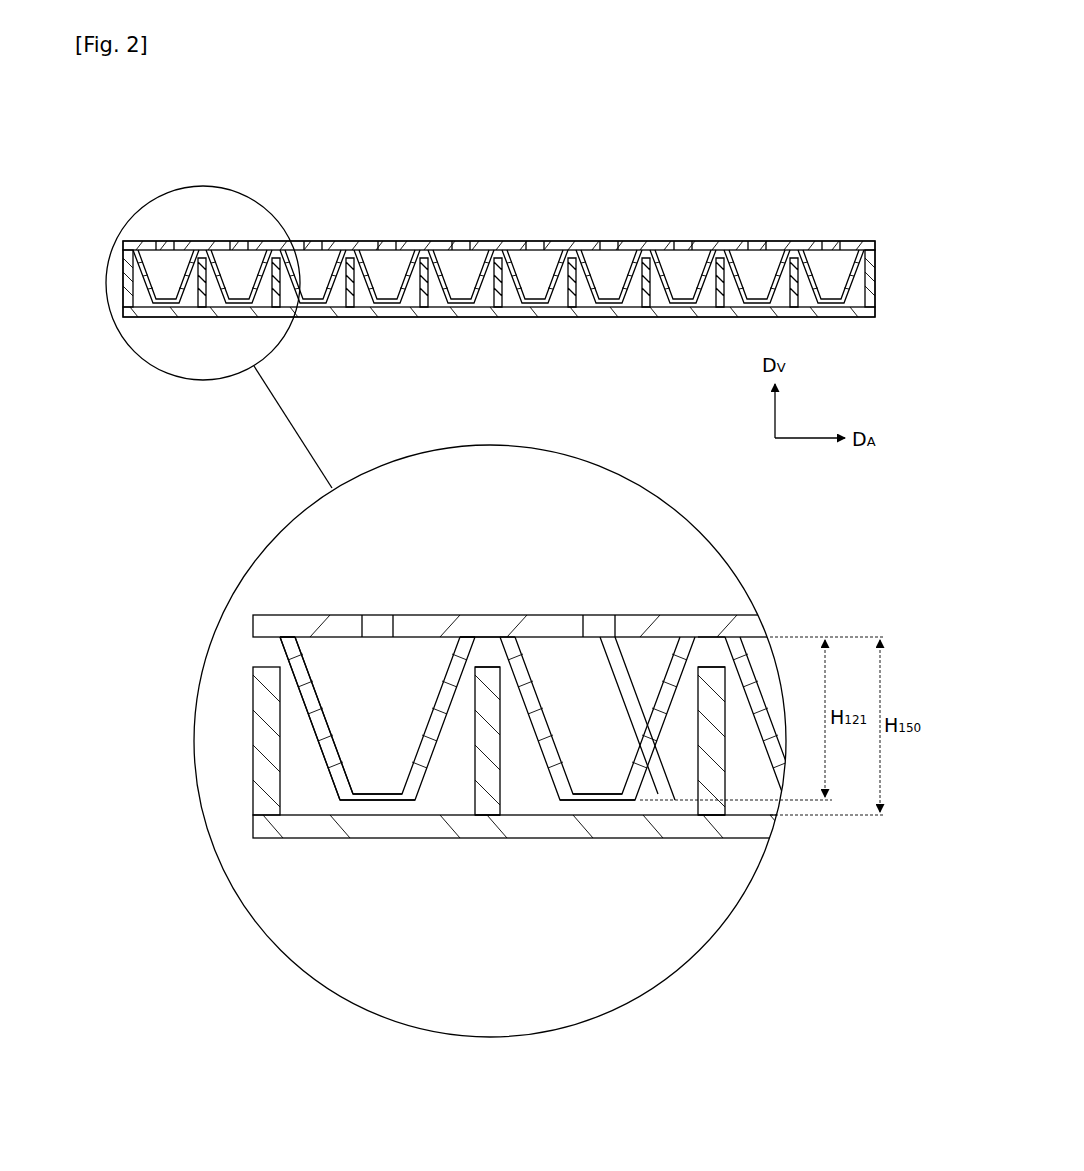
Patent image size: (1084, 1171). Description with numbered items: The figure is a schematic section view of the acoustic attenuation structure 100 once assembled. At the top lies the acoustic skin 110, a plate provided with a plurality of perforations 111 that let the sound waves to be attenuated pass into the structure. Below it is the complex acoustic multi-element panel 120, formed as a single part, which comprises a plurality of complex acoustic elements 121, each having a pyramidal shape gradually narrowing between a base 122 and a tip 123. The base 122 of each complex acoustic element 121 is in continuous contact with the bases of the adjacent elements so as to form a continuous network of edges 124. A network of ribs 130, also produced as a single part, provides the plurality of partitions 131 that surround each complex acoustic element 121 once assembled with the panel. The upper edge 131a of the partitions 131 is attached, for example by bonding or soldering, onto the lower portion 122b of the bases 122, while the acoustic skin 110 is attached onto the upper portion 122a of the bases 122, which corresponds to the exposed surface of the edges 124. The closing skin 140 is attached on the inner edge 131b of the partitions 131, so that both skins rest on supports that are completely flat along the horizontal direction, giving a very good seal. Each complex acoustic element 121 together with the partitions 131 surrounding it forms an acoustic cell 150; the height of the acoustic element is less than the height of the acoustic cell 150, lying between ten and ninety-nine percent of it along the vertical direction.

The acoustic attenuation structure 100 is at (731, 176).
The acoustic skin 110 is at (608, 240).
The perforations 111 is at (240, 240).
The complex acoustic multi-element panel 120 is at (370, 272).
The complex acoustic element 121 is at (703, 275).
The base 122 is at (266, 648).
The edges 124 is at (266, 648).
The upper portion of the base 122a is at (713, 650).
The lower portion of the base 122b is at (503, 667).
The tip 123 is at (352, 790).
The network of ribs 130 is at (877, 271).
The partitions 131 is at (716, 292).
The upper edge of the partitions 131a is at (490, 665).
The inner edge of the partitions 131b is at (490, 822).
The closing skin 140 is at (374, 319).
The acoustic cell 150 is at (541, 270).